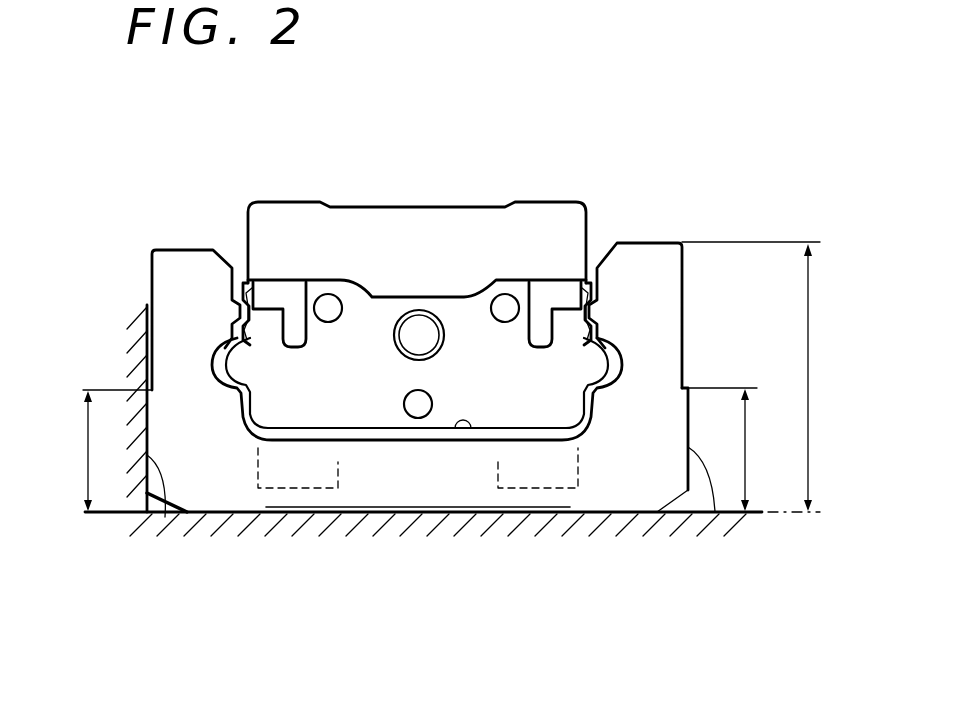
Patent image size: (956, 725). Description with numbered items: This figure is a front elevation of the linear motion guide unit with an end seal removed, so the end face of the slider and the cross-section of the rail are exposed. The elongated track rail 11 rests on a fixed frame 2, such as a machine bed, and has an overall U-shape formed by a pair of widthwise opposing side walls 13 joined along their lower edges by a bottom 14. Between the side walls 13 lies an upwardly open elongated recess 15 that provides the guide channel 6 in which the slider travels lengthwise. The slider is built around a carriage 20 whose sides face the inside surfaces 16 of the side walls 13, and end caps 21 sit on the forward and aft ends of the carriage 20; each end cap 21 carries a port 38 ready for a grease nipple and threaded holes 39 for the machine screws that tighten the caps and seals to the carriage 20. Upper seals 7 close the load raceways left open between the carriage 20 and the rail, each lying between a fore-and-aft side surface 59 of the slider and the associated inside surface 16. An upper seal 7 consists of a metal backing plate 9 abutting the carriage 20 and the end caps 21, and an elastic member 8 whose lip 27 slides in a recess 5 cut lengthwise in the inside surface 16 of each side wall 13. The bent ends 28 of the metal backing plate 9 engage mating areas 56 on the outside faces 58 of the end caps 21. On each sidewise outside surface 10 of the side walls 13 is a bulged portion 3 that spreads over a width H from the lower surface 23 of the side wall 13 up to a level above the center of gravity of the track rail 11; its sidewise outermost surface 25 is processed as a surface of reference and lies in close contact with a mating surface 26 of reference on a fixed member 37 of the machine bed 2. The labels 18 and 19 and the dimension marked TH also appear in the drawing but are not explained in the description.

The fixed frame 2 is at (458, 568).
The bulged portion 3 is at (130, 390).
The recess 5 is at (228, 323).
The guide channel 6 is at (373, 395).
The upper seal 7 is at (270, 292).
The elastic member 8 is at (262, 313).
The metal backing plate 9 is at (257, 203).
The sidewise outside surface 10 is at (152, 292).
The track rail 11 is at (686, 280).
The side walls 13 is at (175, 287).
The bottom 14 is at (430, 507).
The elongated recess 15 is at (463, 428).
The inside surfaces 16 is at (268, 428).
The block top 18 is at (190, 250).
The hidden foot 19 is at (336, 445).
The carriage 20 is at (294, 228).
The end caps 21 is at (337, 388).
The lower surface 23 is at (630, 513).
The sidewise outermost surface 25 is at (128, 425).
The mating surface of reference 26 is at (165, 517).
The lip 27 is at (238, 265).
The bent ends 28 is at (328, 207).
The fixed member of reference 37 is at (132, 422).
The port 38 is at (420, 312).
The threaded holes 39 is at (330, 294).
The mating areas 56 is at (281, 330).
The outside faces 58 is at (472, 340).
The fore-and-aft side surfaces 59 is at (604, 330).
The width H is at (416, 449).
The total height TH is at (814, 377).